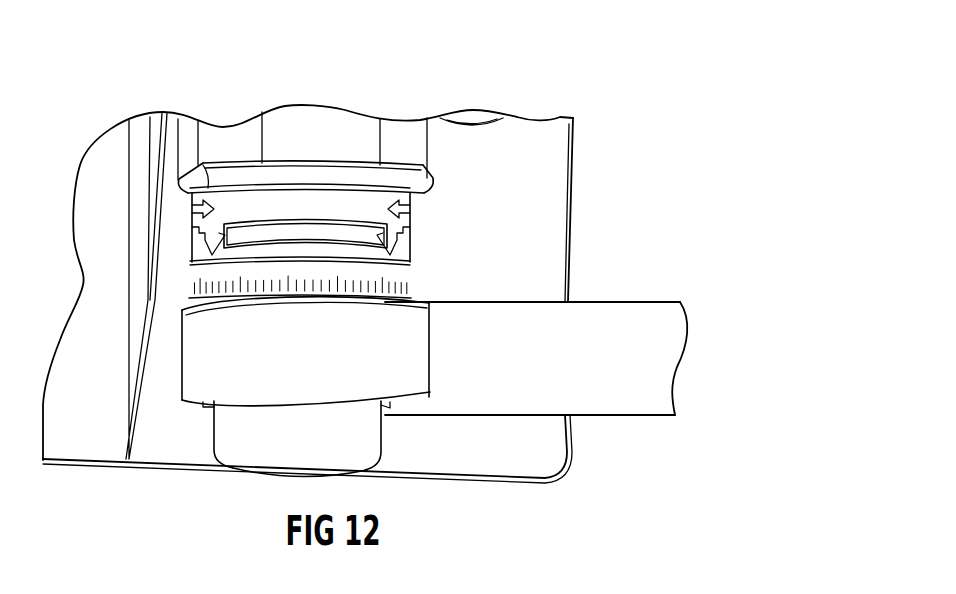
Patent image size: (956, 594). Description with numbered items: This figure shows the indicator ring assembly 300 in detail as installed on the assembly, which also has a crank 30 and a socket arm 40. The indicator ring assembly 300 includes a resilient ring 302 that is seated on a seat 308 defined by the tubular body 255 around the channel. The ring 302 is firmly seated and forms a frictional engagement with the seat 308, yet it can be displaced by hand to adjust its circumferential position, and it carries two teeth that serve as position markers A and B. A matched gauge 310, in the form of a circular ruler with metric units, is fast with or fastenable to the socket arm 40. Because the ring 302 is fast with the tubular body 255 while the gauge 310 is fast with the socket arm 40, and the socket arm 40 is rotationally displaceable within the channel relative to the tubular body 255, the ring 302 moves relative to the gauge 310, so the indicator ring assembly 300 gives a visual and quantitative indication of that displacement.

The crank 30 is at (610, 343).
The socket arm 40 is at (263, 467).
The tubular body 255 is at (420, 143).
The indicator ring assembly 300 is at (366, 180).
The resilient ring 302 is at (290, 203).
The seat 308 is at (320, 230).
The gauge 310 is at (297, 283).